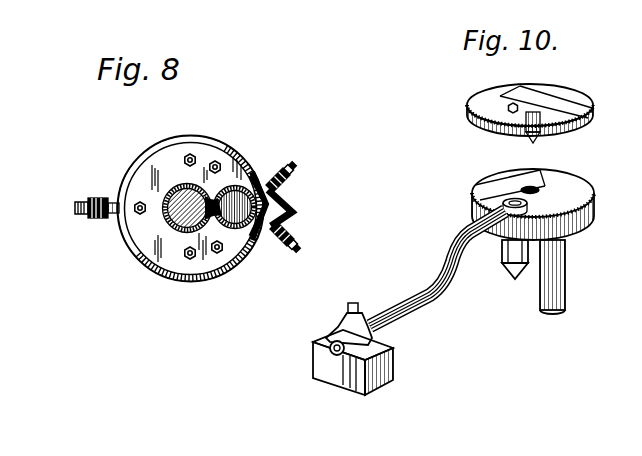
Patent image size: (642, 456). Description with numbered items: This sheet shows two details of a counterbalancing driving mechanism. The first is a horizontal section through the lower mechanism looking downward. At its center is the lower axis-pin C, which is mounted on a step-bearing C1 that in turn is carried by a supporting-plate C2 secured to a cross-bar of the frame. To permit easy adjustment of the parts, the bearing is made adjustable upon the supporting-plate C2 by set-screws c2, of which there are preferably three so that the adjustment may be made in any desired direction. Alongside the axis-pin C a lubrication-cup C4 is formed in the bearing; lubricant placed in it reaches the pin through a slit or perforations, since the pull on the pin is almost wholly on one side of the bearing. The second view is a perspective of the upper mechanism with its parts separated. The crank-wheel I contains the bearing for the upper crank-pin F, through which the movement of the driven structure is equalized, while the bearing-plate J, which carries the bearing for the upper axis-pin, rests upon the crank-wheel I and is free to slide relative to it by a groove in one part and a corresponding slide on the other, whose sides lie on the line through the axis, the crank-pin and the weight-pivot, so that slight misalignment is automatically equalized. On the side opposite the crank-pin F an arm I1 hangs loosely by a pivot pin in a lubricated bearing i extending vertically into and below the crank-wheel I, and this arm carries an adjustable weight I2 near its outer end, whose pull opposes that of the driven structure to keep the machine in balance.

In FIG. 8, the lower axis-pin C is at (170, 220).
In FIG. 8, the step-bearing C1 is at (176, 292).
In FIG. 8, the supporting-plate C2 is at (155, 145).
In FIG. 8, the set-screws c2 is at (320, 235).
In FIG. 8, the lubrication-cup C4 is at (242, 187).
In FIG. 10, the bearing-plate J is at (572, 100).
In FIG. 10, the crank-wheel I is at (588, 209).
In FIG. 10, the arm I1 is at (420, 303).
In FIG. 10, the weight I2 is at (330, 363).
In FIG. 10, the lubricated bearing i is at (502, 265).
In FIG. 10, the crank-pin F is at (557, 275).